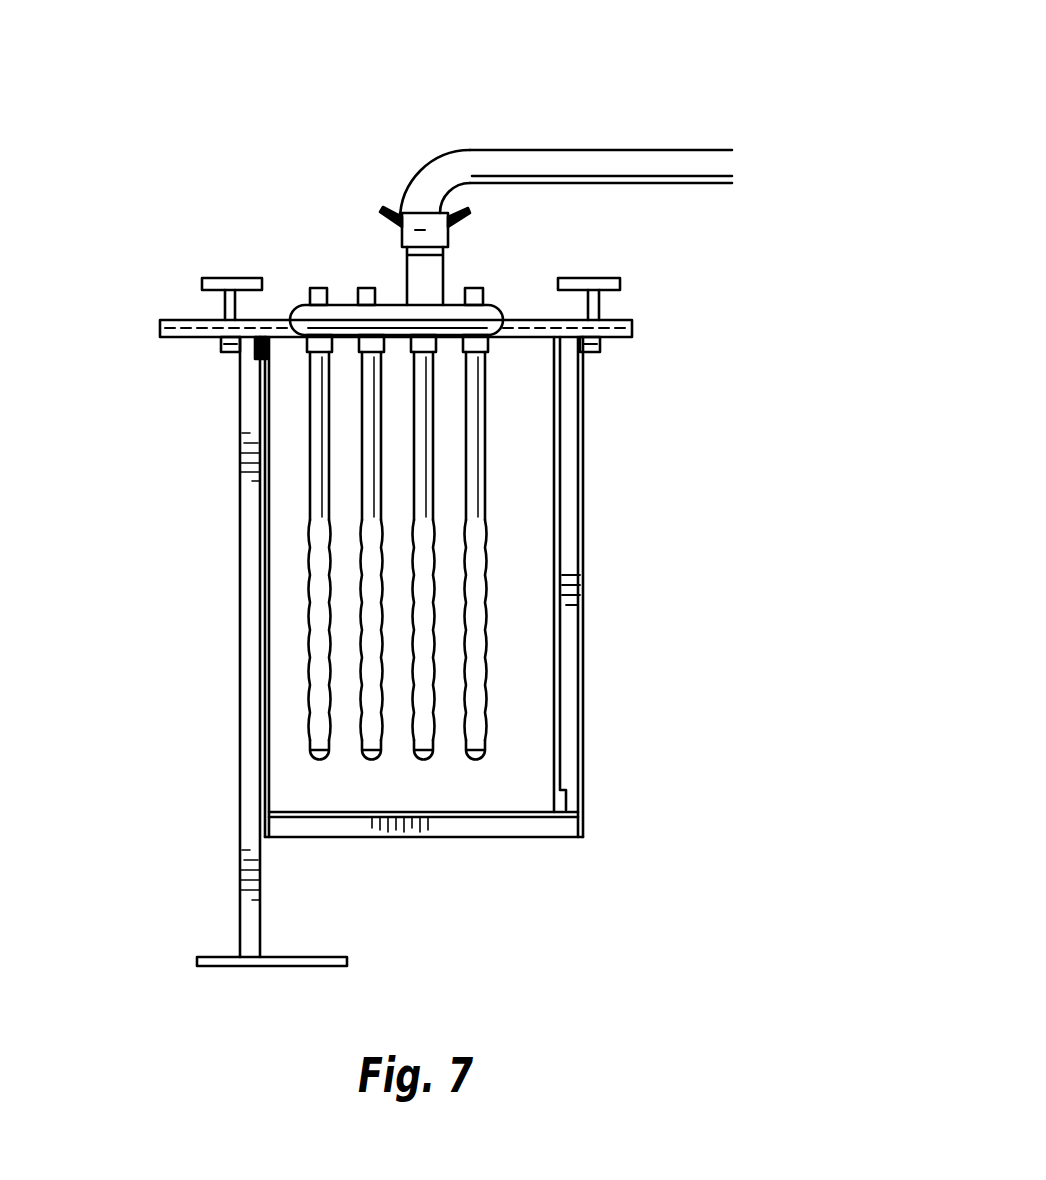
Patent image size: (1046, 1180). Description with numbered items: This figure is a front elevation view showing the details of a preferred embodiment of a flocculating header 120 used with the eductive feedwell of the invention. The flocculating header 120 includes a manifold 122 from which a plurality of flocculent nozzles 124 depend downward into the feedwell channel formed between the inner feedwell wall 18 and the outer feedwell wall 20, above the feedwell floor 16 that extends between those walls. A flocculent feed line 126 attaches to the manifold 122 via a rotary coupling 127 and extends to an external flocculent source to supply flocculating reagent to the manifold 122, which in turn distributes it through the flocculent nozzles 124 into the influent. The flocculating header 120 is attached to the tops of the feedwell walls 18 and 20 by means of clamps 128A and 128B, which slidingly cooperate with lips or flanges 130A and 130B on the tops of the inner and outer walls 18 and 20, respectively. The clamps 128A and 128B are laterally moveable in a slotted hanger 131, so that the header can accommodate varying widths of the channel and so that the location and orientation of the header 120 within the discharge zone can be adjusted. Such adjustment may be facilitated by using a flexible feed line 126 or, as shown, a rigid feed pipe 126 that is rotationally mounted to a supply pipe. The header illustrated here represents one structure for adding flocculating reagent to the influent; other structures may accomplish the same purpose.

The feedwell floor 16 is at (447, 820).
The inner feedwell wall 18 is at (583, 566).
The outer feedwell wall 20 is at (240, 636).
The flocculating header 120 is at (345, 245).
The manifold 122 is at (300, 306).
The flocculent nozzles 124 is at (330, 658).
The flocculent feed line 126 is at (480, 150).
The rotary coupling 127 is at (445, 214).
The clamp 128A is at (620, 284).
The clamp 128B is at (202, 284).
The lip or flange 130A is at (585, 352).
The lip or flange 130B is at (222, 352).
The slotted hanger 131 is at (632, 321).